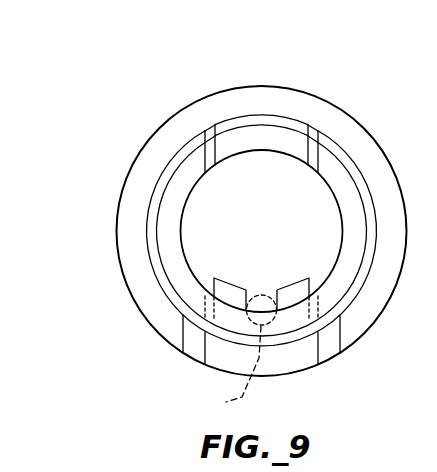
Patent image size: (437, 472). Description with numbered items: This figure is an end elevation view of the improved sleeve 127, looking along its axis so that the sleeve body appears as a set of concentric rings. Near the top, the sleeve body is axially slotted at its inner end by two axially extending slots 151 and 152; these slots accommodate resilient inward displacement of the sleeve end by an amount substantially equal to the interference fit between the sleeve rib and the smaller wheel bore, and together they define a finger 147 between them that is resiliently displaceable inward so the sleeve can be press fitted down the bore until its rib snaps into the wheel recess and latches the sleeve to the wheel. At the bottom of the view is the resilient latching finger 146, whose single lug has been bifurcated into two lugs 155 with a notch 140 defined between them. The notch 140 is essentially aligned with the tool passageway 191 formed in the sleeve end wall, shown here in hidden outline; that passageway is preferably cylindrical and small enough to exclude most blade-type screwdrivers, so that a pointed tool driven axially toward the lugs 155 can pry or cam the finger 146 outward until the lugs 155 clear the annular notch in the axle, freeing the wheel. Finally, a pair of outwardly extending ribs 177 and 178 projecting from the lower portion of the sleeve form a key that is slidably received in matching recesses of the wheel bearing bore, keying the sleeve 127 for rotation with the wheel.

The sleeve 127 is at (292, 86).
The finger 147 is at (287, 142).
The axially extending slot 151 is at (207, 128).
The axially extending slot 152 is at (317, 130).
The notch 140 is at (255, 292).
The lugs 155 is at (245, 284).
The resilient finger 146 is at (284, 322).
The outwardly extending rib 178 is at (198, 352).
The outwardly extending rib 177 is at (327, 350).
The tool passageway 191 is at (224, 368).